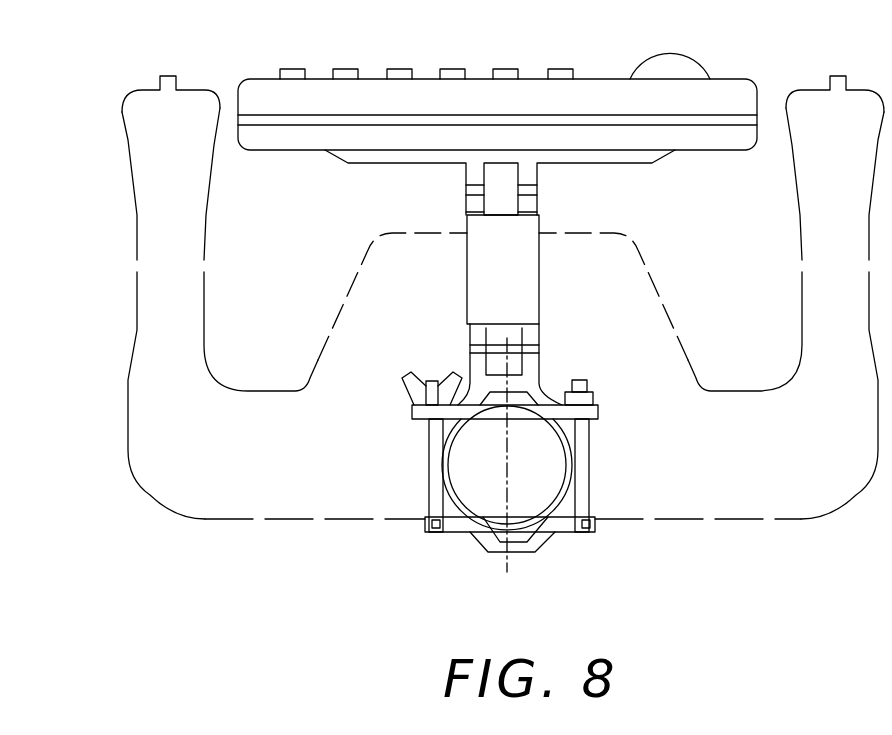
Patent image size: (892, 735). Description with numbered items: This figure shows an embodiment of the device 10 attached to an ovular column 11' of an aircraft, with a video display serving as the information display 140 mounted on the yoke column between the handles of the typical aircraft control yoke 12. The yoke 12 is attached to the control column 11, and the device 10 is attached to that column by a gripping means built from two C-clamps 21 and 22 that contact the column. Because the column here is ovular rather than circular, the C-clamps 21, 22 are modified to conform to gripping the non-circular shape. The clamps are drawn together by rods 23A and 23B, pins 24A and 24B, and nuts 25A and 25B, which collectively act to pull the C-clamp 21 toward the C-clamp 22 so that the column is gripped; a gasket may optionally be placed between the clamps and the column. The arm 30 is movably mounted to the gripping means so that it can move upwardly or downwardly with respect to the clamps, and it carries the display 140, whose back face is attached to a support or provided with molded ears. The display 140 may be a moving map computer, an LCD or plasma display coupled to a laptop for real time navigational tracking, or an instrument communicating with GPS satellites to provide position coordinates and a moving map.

The aircraft control yoke 12 is at (120, 113).
The information display 140 is at (735, 37).
The device 10 is at (466, 188).
The arm 30 is at (466, 281).
The C-clamp 22 is at (543, 377).
The nut 25B is at (410, 392).
The nut 25A is at (598, 393).
The rod 23B is at (429, 456).
The rod 23A is at (590, 455).
The control column 11 is at (526, 505).
The ovular column 11' is at (455, 474).
The pin 24B is at (437, 532).
The pin 24A is at (586, 532).
The C-clamp 21 is at (489, 553).